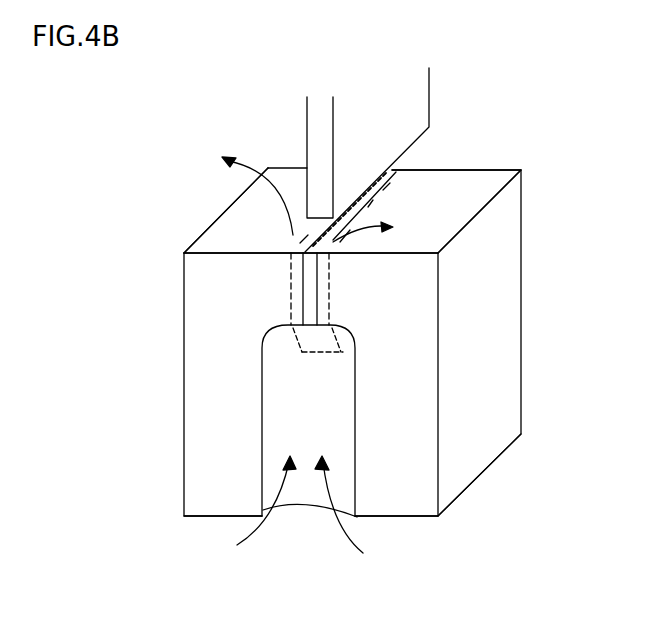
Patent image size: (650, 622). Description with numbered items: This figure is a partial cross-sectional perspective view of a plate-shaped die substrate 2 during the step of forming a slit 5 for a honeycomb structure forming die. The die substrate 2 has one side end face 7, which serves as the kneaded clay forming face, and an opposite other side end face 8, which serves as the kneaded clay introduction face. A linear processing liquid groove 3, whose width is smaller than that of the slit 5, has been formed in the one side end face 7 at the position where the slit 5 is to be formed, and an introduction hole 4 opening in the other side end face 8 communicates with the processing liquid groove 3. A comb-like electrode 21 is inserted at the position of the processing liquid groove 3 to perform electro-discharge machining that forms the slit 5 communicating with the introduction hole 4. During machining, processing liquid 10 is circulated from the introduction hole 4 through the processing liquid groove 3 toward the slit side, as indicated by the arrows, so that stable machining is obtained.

The die substrate 2 is at (483, 405).
The processing liquid groove 3 is at (307, 310).
The introduction hole 4 is at (343, 475).
The slit 5 is at (363, 210).
The one side end face 7 is at (477, 183).
The other side end face 8 is at (467, 495).
The processing liquid 10 is at (300, 454).
The comb-like electrode 21 is at (413, 97).